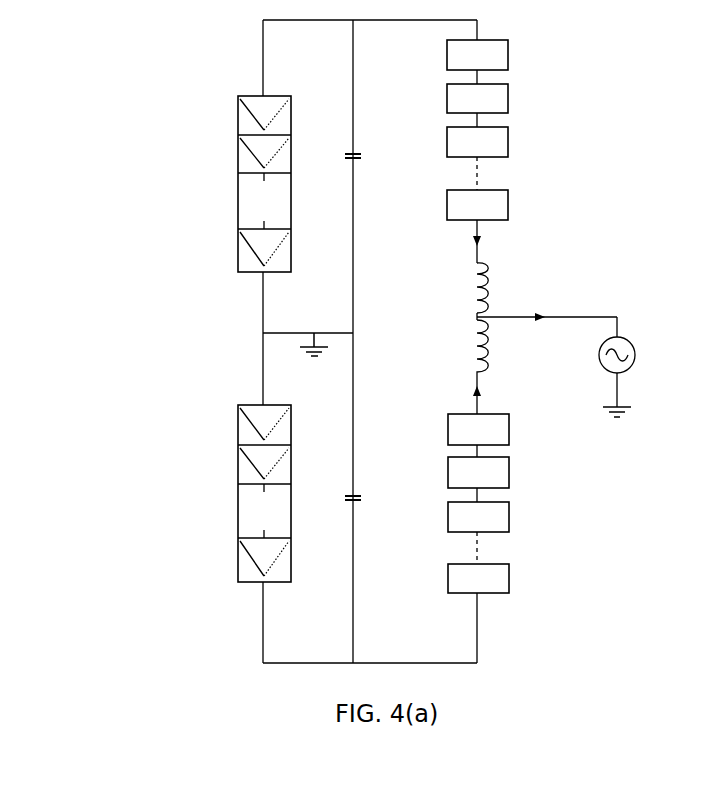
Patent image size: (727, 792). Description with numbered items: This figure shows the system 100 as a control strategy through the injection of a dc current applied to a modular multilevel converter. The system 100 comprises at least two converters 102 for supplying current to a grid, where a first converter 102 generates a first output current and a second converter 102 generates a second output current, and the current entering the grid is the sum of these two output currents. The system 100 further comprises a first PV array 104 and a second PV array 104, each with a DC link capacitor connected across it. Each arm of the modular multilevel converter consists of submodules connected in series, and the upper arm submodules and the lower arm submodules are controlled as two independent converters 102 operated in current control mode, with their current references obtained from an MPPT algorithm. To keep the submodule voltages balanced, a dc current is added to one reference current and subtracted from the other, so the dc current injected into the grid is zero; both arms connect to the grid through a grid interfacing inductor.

The system 100 is at (108, 70).
The converter 102 is at (480, 630).
The PV array 104 is at (238, 178).